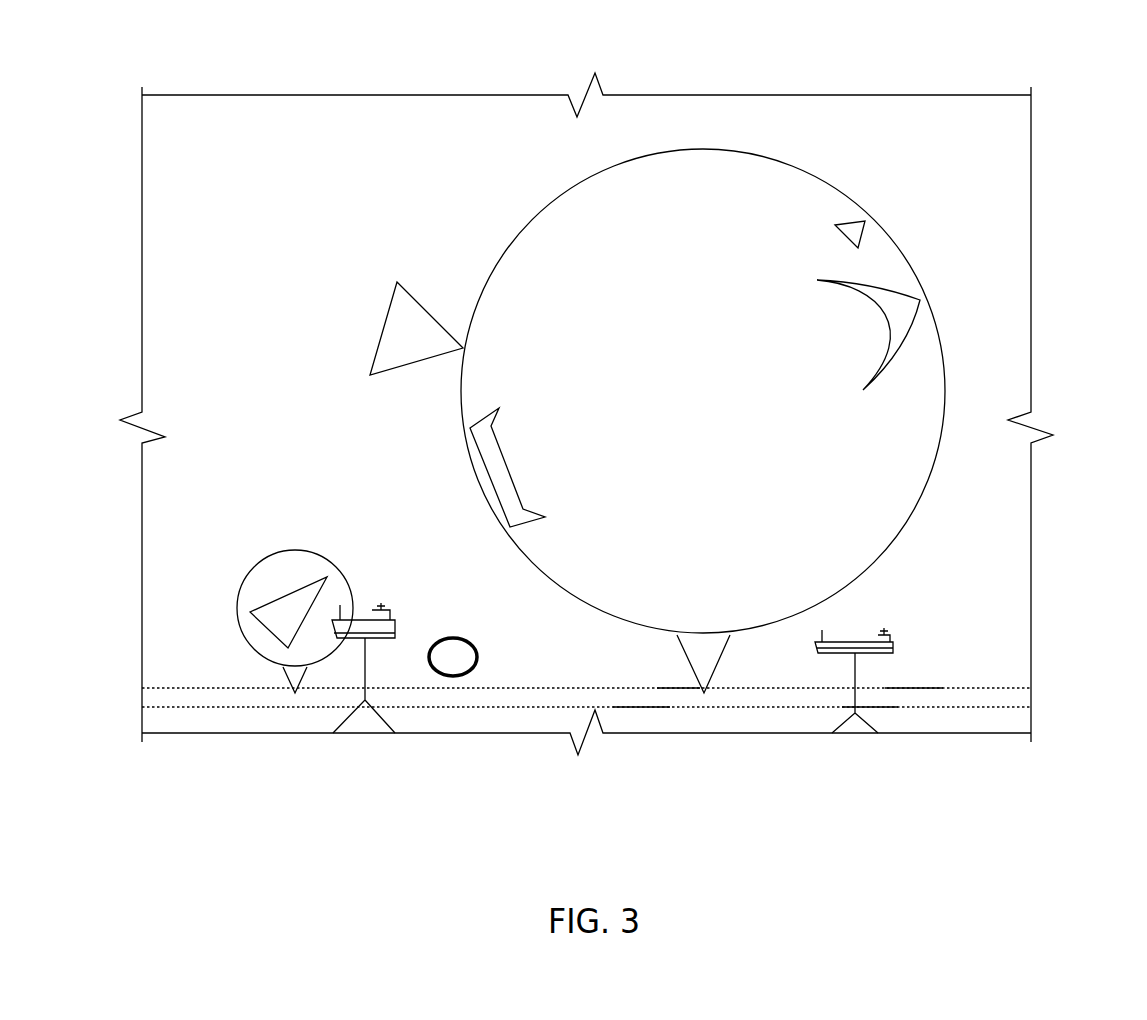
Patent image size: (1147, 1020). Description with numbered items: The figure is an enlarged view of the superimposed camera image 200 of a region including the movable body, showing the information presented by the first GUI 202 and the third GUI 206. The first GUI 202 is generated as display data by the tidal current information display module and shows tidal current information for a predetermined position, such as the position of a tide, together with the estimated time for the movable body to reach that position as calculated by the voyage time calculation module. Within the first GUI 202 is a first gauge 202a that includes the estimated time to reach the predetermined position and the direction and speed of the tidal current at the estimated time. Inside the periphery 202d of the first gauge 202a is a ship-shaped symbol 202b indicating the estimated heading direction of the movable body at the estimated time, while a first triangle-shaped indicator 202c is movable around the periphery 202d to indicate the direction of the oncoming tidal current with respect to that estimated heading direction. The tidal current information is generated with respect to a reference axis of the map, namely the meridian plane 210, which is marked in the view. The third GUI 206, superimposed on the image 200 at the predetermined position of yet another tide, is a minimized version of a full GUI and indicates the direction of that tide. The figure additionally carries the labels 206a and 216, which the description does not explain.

The superimposed camera image 200 is at (233, 62).
The first GUI 202 is at (713, 130).
The first gauge 202a is at (678, 612).
The ship-shaped symbol 202b is at (472, 447).
The first triangle-shaped indicator 202c is at (385, 322).
The periphery 202d is at (535, 216).
The third GUI 206 is at (295, 550).
The compass heading arrow 206a is at (272, 602).
The meridian plane 210 is at (865, 225).
The vessel position indicator 216 is at (708, 663).